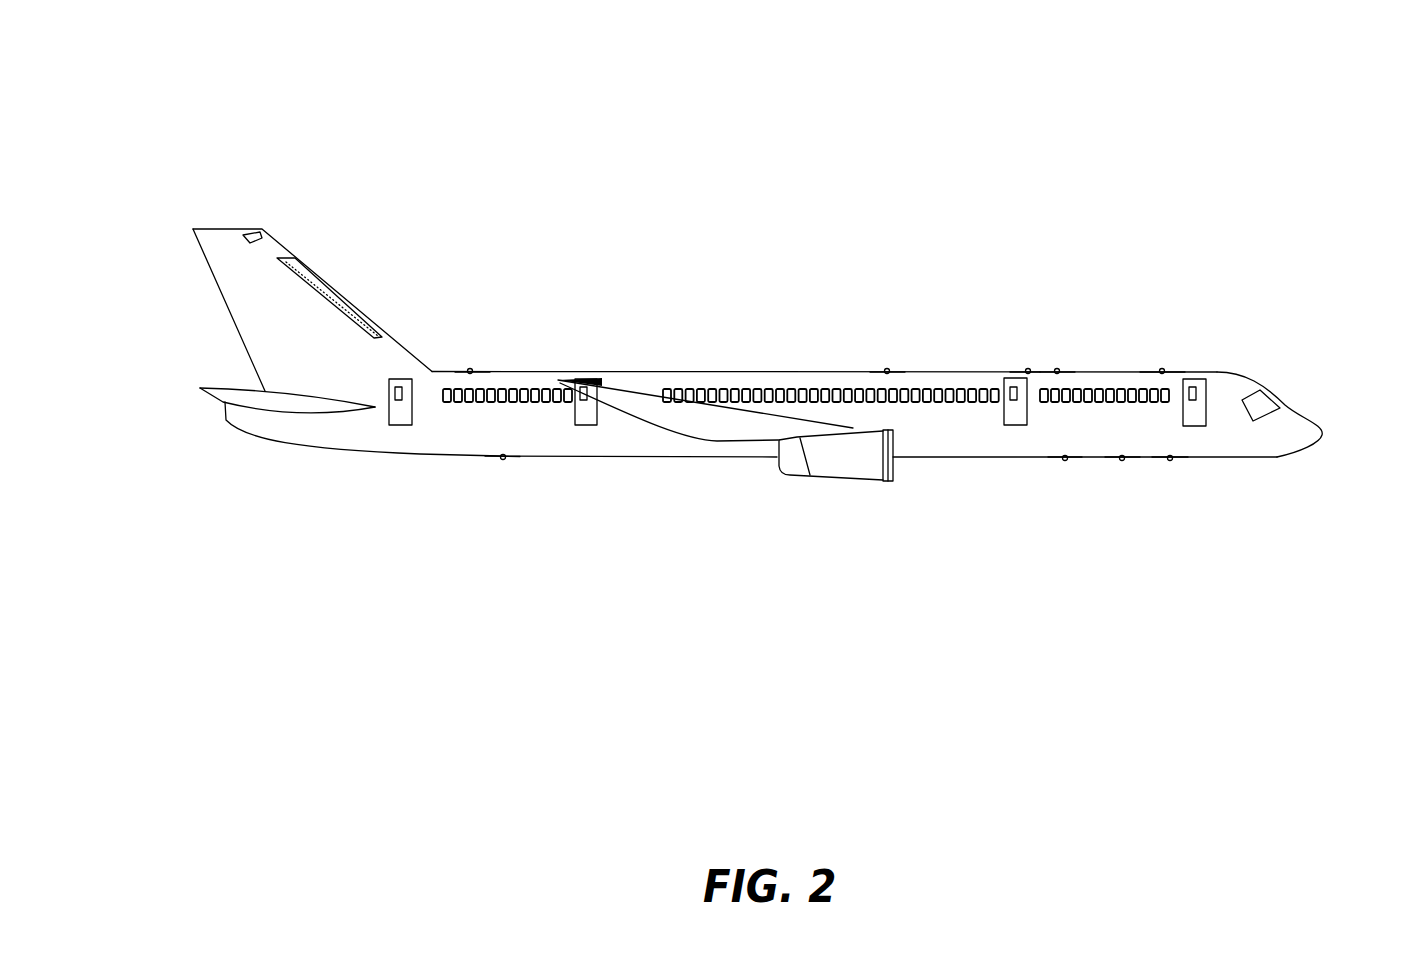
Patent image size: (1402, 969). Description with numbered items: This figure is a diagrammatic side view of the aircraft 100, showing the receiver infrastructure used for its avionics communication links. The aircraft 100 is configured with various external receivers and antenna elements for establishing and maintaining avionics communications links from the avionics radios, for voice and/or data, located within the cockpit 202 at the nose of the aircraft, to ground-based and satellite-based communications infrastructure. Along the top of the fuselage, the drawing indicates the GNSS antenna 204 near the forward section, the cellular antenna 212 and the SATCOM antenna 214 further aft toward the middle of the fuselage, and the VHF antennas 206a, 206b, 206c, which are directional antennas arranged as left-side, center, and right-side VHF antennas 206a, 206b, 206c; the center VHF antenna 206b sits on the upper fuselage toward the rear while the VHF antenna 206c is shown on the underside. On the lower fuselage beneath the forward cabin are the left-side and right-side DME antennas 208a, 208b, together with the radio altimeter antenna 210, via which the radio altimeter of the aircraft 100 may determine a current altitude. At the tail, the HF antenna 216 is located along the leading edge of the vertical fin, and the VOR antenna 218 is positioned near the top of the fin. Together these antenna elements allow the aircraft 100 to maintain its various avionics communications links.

The aircraft 100 is at (203, 87).
The cockpit 202 is at (1290, 390).
The GNSS antenna 204 is at (1163, 370).
The left-side VHF antenna 206a is at (1058, 370).
The center VHF antenna 206b is at (472, 368).
The right-side VHF antenna 206c is at (505, 459).
The left-side DME antenna 208a is at (1172, 460).
The right-side DME antenna 208b is at (1063, 460).
The radio altimeter antenna 210 is at (1123, 460).
The cellular antenna 212 is at (1027, 369).
The SATCOM antenna 214 is at (886, 369).
The HF antenna 216 is at (343, 295).
The VOR antenna 218 is at (268, 235).